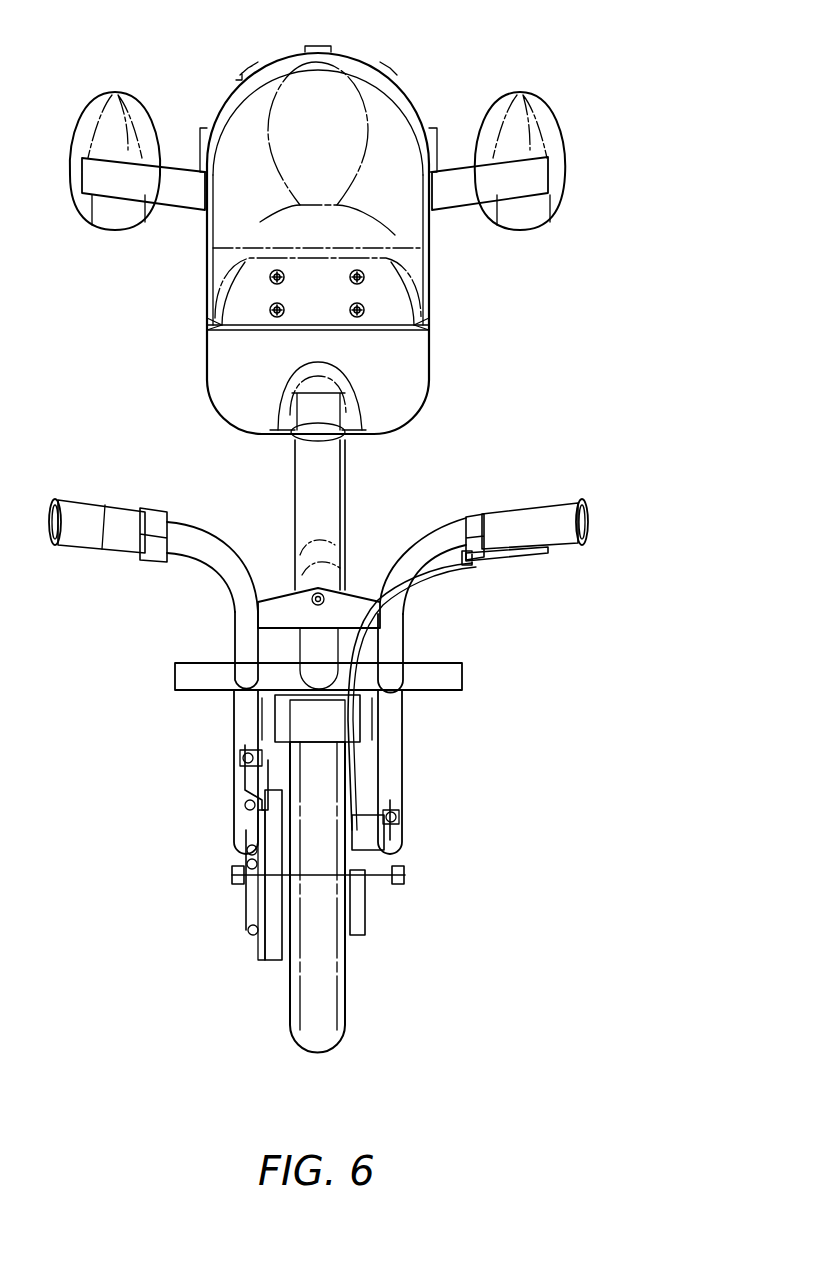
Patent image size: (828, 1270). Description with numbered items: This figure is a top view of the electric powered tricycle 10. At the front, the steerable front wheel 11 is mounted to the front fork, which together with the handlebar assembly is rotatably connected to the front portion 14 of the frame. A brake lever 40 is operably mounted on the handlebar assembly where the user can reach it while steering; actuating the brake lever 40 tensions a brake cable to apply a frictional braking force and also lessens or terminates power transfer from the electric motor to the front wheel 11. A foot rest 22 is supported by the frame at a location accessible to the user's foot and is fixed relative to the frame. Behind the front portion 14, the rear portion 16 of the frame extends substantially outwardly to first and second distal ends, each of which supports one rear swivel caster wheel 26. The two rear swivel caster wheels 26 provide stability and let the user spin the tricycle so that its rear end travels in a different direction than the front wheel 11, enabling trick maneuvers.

The tricycle 10 is at (618, 327).
The front wheel 11 is at (345, 1012).
The front portion 14 is at (325, 552).
The rear portion 16 is at (465, 210).
The foot rest 22 is at (455, 697).
The rear swivel caster wheel 26 is at (115, 108).
The brake lever 40 is at (490, 560).